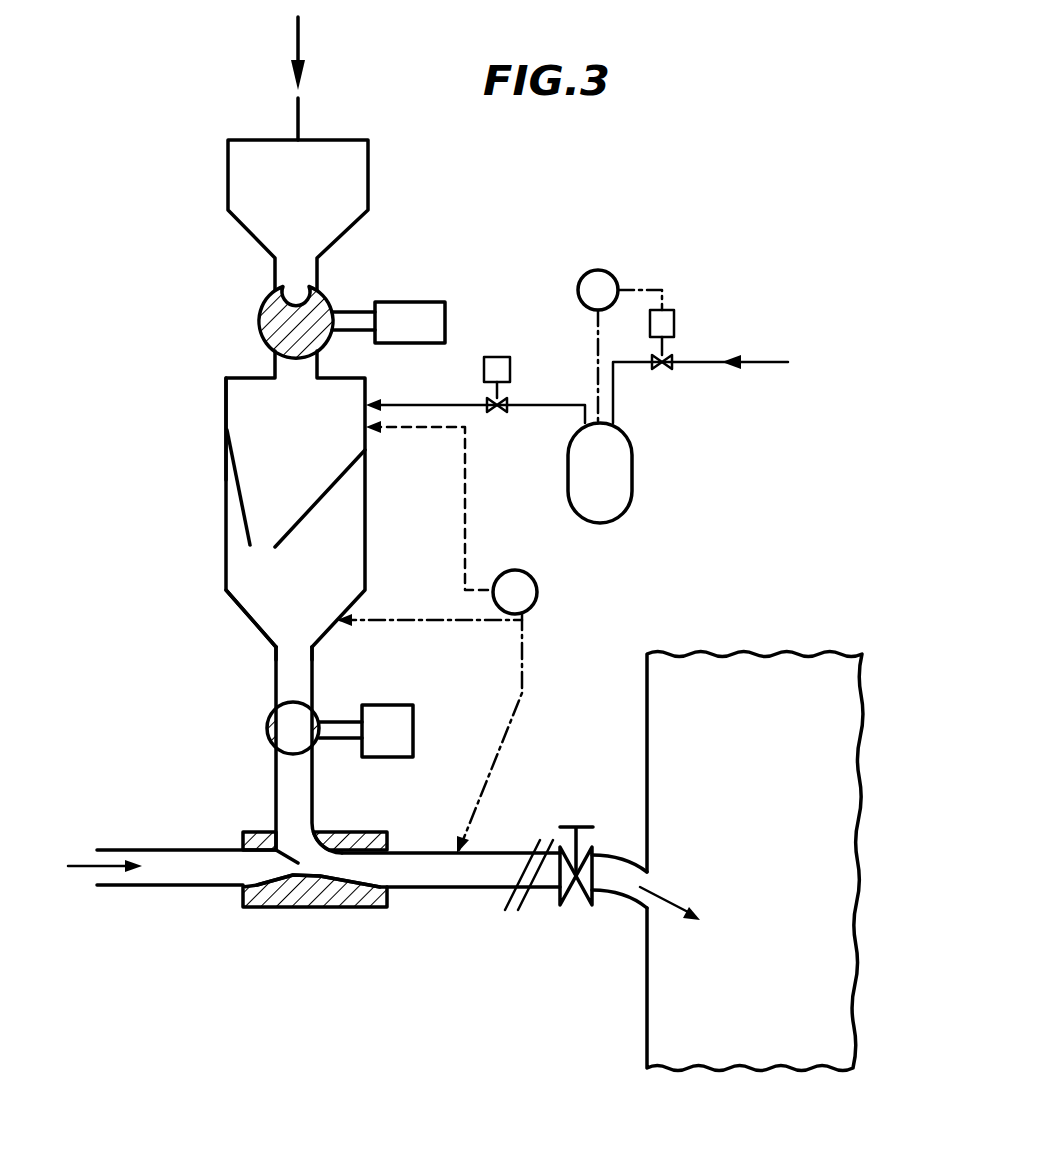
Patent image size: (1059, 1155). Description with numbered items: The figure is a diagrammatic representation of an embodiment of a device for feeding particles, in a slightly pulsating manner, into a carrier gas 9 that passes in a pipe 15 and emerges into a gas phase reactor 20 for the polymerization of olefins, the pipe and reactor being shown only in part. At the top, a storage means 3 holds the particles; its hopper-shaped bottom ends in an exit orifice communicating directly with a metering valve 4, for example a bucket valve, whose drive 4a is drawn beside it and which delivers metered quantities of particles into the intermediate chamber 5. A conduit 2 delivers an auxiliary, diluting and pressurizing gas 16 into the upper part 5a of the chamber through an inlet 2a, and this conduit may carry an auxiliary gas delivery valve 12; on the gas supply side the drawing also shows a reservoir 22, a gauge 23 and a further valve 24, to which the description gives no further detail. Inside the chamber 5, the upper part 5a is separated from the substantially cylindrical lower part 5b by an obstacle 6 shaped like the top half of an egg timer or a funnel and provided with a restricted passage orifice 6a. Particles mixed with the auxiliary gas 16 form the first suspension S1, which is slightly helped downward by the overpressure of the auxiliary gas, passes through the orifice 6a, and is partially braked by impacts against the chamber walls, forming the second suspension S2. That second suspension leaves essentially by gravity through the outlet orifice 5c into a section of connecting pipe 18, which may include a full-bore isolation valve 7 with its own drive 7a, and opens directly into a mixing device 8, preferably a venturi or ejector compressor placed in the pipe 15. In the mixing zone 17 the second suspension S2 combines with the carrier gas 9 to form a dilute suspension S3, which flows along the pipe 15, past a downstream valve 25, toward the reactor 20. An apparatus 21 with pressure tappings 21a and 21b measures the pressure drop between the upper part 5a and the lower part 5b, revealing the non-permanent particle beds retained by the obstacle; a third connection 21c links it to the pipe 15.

The conduit 2 is at (450, 404).
The gas inlet 2a is at (372, 402).
The storage means 3 is at (224, 171).
The metering valve 4 is at (286, 328).
The drive motor of rotary feeder 4a is at (412, 322).
The intermediate chamber 5 is at (224, 526).
The upper part 5a is at (255, 422).
The lower part 5b is at (240, 604).
The outlet orifice 5c is at (292, 653).
The obstacle 6 is at (290, 523).
The restricted passage orifice 6a is at (262, 542).
The isolation valve 7 is at (300, 748).
The drive motor of discharge valve 7a is at (400, 727).
The mixing device 8 is at (283, 908).
The carrier gas 9 is at (88, 866).
The auxiliary gas delivery valve 12 is at (499, 412).
The pipe 15 is at (460, 890).
The auxiliary gas 16 is at (770, 358).
The mixing zone 17 is at (331, 864).
The connecting pipe 18 is at (276, 675).
The gas phase reactor 20 is at (672, 1017).
The pressure measuring apparatus 21 is at (538, 591).
The pressure tapping 21a is at (372, 430).
The pressure tapping 21b is at (350, 623).
The control line to conveying pipe 21c is at (470, 846).
The pressure reservoir (P16) 22 is at (607, 447).
The pressure sensor 23 is at (604, 282).
The shut-off valve 24 is at (667, 370).
The outlet valve 25 is at (577, 882).
The first suspension S1 is at (307, 453).
The second suspension S2 is at (305, 598).
The dilute suspension S3 is at (450, 843).